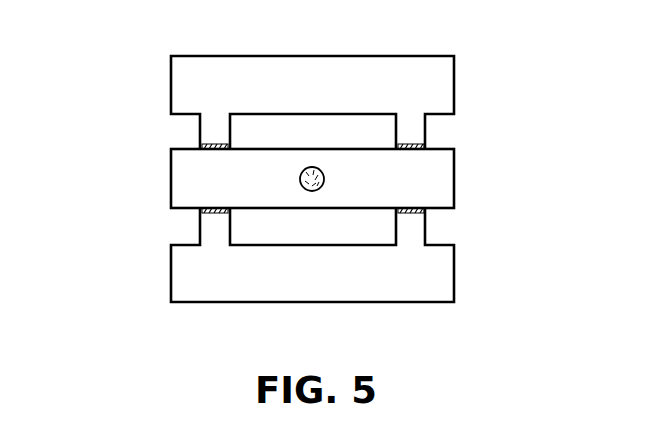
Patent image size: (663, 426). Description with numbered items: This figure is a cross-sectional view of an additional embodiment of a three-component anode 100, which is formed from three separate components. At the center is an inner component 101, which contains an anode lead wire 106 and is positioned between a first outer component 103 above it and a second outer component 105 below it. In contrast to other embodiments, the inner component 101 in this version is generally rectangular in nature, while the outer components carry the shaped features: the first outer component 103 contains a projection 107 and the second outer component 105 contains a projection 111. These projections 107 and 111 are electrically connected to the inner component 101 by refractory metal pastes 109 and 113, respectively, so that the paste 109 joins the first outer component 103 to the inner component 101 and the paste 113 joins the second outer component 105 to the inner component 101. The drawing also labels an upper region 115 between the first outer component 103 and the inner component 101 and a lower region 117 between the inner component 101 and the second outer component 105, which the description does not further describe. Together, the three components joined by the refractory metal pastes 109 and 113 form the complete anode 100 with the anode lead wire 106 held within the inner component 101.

The three-component anode 100 is at (111, 127).
The inner component 101 is at (445, 178).
The first outer component 103 is at (447, 83).
The second outer component 105 is at (445, 268).
The anode lead wire 106 is at (325, 179).
The projection 107 is at (200, 130).
The refractory metal paste 109 is at (214, 146).
The projection 111 is at (200, 226).
The refractory metal paste 113 is at (215, 214).
The upper spacer 115 is at (309, 140).
The lower spacer 117 is at (288, 217).